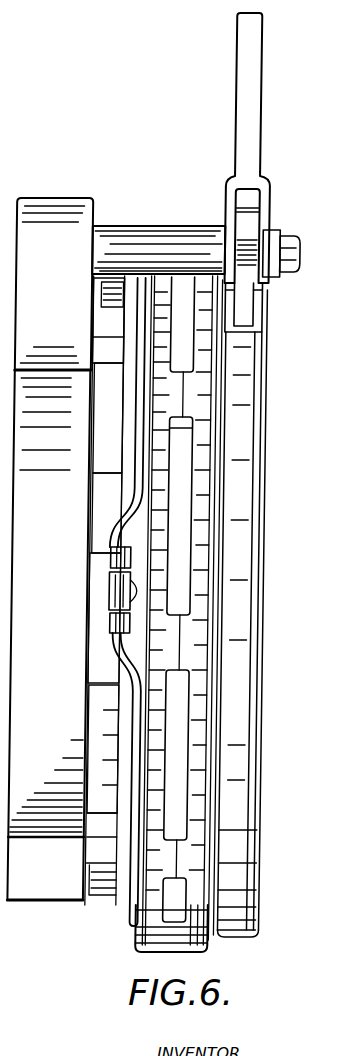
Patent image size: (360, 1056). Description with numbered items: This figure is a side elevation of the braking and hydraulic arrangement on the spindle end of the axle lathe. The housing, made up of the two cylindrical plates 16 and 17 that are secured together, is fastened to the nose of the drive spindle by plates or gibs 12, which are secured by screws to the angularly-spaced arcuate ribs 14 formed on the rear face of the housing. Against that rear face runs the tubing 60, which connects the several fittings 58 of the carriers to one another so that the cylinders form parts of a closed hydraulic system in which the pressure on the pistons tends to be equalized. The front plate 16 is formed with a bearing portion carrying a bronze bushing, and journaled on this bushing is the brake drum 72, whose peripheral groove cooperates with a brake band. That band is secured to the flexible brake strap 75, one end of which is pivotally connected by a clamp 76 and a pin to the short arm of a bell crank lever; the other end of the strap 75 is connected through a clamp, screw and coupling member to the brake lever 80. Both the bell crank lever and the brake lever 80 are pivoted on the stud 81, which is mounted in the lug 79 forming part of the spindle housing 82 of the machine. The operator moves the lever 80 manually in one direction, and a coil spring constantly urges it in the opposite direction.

The plates or gibs 12 is at (99, 324).
The arcuate ribs 14 is at (111, 460).
The front cylindrical plate 16 is at (213, 940).
The rear cylindrical plate 17 is at (157, 933).
The fitting 58 is at (118, 589).
The tubing 60 is at (121, 655).
The brake drum 72 is at (263, 825).
The flexible brake strap 75 is at (248, 617).
The clamp 76 is at (247, 318).
The lug 79 is at (42, 205).
The brake lever 80 is at (248, 103).
The stud 81 is at (240, 245).
The spindle housing 82 is at (77, 790).